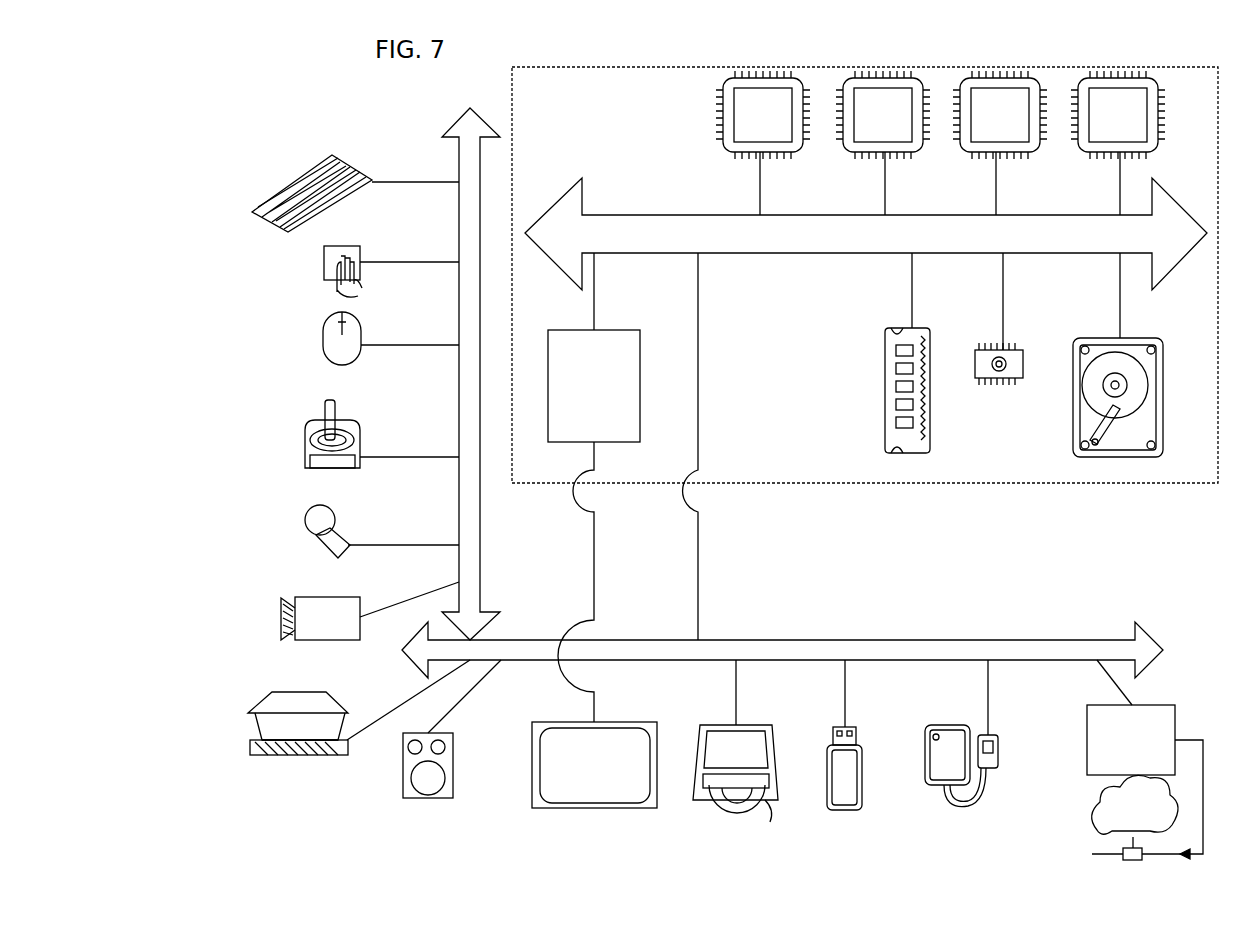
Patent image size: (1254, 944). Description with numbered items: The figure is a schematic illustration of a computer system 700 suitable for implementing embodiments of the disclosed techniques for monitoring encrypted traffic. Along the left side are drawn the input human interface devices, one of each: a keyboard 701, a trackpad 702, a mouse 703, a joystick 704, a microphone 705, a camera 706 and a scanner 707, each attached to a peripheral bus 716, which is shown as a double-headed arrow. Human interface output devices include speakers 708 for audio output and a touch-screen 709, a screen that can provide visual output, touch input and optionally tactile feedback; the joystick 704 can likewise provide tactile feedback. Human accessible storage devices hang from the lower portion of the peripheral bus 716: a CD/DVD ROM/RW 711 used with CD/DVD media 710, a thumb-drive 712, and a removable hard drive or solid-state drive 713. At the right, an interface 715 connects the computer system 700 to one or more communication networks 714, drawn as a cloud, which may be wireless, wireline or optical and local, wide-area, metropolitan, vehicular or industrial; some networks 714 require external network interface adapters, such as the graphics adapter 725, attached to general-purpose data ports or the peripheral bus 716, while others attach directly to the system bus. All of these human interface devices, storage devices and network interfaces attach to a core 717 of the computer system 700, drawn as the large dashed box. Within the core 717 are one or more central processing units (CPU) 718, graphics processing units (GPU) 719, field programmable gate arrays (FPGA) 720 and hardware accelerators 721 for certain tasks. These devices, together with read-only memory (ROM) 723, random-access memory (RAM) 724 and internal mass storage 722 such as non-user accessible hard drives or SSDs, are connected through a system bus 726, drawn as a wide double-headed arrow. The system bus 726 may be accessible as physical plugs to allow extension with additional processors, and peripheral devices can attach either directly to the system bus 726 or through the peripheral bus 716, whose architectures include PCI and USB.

The computer system 700 is at (272, 93).
The keyboard 701 is at (252, 214).
The trackpad 702 is at (318, 272).
The mouse 703 is at (318, 340).
The joystick 704 is at (305, 455).
The microphone 705 is at (305, 525).
The camera 706 is at (282, 626).
The scanner 707 is at (250, 740).
The speakers 708 is at (428, 798).
The touch-screen 709 is at (594, 808).
The CD/DVD media 710 is at (716, 800).
The CD/DVD ROM/RW 711 is at (791, 827).
The thumb-drive 712 is at (843, 810).
The removable hard drive or solid-state drive 713 is at (925, 790).
The communication networks 714 is at (1097, 822).
The network interface 715 is at (1145, 760).
The peripheral bus 716 is at (440, 136).
The core 717 is at (857, 483).
The central processing unit 718 is at (763, 143).
The graphics processing unit 719 is at (883, 143).
The field programmable gate array 720 is at (1000, 143).
The hardware accelerator 721 is at (1118, 143).
The internal mass storage 722 is at (1078, 338).
The read-only memory 723 is at (990, 380).
The random-access memory 724 is at (885, 393).
The graphics adapter 725 is at (594, 487).
The system bus 726 is at (866, 234).